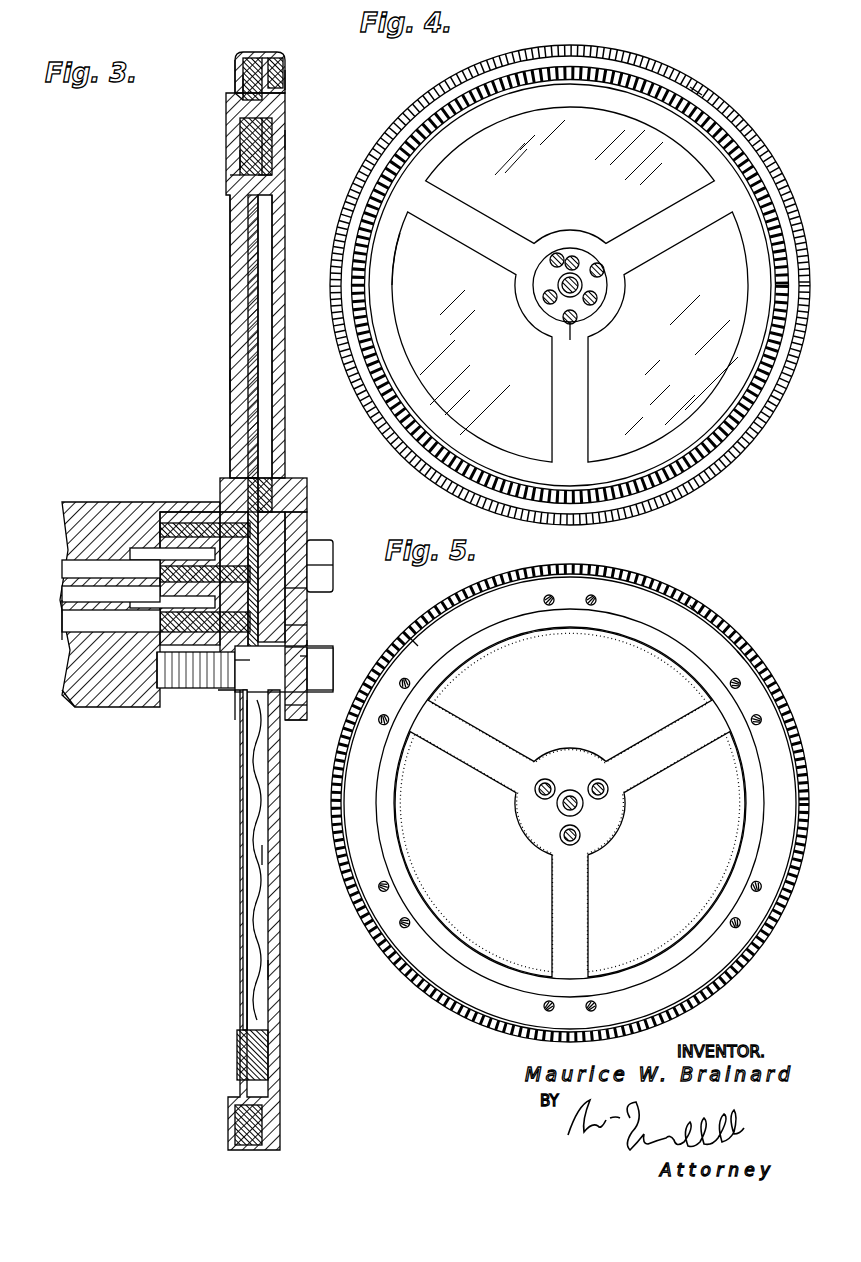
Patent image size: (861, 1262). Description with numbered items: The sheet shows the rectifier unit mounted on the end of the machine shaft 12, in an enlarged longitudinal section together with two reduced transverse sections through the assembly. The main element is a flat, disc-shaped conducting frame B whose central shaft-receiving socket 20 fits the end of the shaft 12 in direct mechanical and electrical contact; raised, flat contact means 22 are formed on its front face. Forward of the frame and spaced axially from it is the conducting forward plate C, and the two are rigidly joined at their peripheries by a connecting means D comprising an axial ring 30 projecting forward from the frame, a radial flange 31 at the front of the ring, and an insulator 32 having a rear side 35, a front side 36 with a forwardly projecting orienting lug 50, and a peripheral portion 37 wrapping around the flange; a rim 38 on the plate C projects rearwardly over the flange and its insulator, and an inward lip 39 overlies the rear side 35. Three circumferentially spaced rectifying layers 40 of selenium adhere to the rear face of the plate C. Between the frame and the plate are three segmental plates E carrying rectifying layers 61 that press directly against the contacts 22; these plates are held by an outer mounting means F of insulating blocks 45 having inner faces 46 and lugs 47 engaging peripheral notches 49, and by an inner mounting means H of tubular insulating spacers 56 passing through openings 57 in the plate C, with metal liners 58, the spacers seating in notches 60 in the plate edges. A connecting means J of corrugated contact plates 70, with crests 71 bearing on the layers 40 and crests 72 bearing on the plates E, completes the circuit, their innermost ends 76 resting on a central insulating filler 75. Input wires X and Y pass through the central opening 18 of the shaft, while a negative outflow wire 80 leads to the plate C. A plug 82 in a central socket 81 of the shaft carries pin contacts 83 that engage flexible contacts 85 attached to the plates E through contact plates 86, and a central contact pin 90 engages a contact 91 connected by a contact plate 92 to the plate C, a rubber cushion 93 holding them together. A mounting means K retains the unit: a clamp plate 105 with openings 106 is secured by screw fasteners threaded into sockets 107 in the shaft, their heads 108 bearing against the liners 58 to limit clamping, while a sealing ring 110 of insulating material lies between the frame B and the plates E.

In FIG. 3, the shaft 12 is at (90, 705).
In FIG. 3, the central opening 18 is at (62, 622).
In FIG. 3, the shaft-receiving socket 20 is at (226, 514).
In FIG. 3, the contact means 22 is at (240, 332).
In FIG. 4, the contact means 22 is at (570, 303).
In FIG. 3, the axial ring 30 is at (284, 112).
In FIG. 4, the axial ring 30 is at (409, 237).
In FIG. 3, the radially disposed flange 31 is at (284, 96).
In FIG. 3, the insulator 32 is at (284, 140).
In FIG. 4, the insulator 32 is at (570, 285).
In FIG. 5, the insulator 32 is at (447, 626).
In FIG. 3, the insulator side 35 is at (242, 80).
In FIG. 3, the insulator side 36 is at (270, 64).
In FIG. 3, the peripheral portion 37 is at (258, 54).
In FIG. 5, the peripheral portion 37 is at (570, 803).
In FIG. 3, the rim 38 is at (268, 62).
In FIG. 4, the rim 38 is at (570, 285).
In FIG. 5, the rim 38 is at (570, 790).
In FIG. 3, the lip 39 is at (240, 96).
In FIG. 3, the rectifying layers 40 is at (272, 305).
In FIG. 5, the rectifying layers 40 is at (570, 820).
In FIG. 3, the blocks 45 is at (242, 130).
In FIG. 3, the inner faces 46 is at (262, 180).
In FIG. 3, the lug 47 is at (266, 168).
In FIG. 3, the peripheral notches 49 is at (236, 165).
In FIG. 3, the forwardly projecting lug 50 is at (286, 80).
In FIG. 5, the forwardly projecting lug 50 is at (570, 803).
In FIG. 3, the spacers 56 is at (250, 656).
In FIG. 3, the openings 57 is at (306, 660).
In FIG. 3, the metal liners 58 is at (240, 718).
In FIG. 3, the notches 60 is at (200, 688).
In FIG. 3, the rectifying layers 61 is at (246, 272).
In FIG. 3, the contact 70 is at (255, 850).
In FIG. 3, the crests 71 is at (268, 900).
In FIG. 3, the crests 72 is at (246, 935).
In FIG. 3, the central filler 75 is at (270, 480).
In FIG. 3, the innermost ends 76 is at (300, 692).
In FIG. 3, the outflow wire 80 is at (111, 621).
In FIG. 3, the central socket 81 is at (162, 524).
In FIG. 3, the plug 82 is at (98, 700).
In FIG. 3, the pin contacts 83 is at (205, 522).
In FIG. 4, the pin contacts 83 is at (568, 286).
In FIG. 3, the flexible contact 85 is at (286, 522).
In FIG. 3, the contact plate 86 is at (308, 500).
In FIG. 3, the central contact pin 90 is at (320, 590).
In FIG. 4, the central contact pin 90 is at (608, 287).
In FIG. 5, the central contact pin 90 is at (611, 805).
In FIG. 3, the contact 91 is at (333, 565).
In FIG. 3, the contact plate 92 is at (333, 548).
In FIG. 3, the cushion 93 is at (300, 480).
In FIG. 3, the clamp plate 105 is at (290, 724).
In FIG. 3, the openings 106 is at (333, 670).
In FIG. 3, the threaded sockets 107 is at (162, 680).
In FIG. 3, the heads 108 is at (307, 710).
In FIG. 3, the sealing ring 110 is at (250, 486).
In FIG. 3, the frame B is at (218, 830).
In FIG. 3, the forward plate C is at (276, 970).
In FIG. 5, the forward plate C is at (753, 637).
In FIG. 3, the connecting means D is at (234, 72).
In FIG. 4, the connecting means D is at (701, 75).
In FIG. 5, the connecting means D is at (699, 591).
In FIG. 3, the segmental plates E is at (230, 382).
In FIG. 3, the outer mounting means F is at (240, 160).
In FIG. 3, the inner mounting means H is at (300, 630).
In FIG. 5, the inner mounting means H is at (570, 864).
In FIG. 3, the connecting means J is at (264, 856).
In FIG. 3, the mounting means K is at (322, 650).
In FIG. 4, the mounting means K is at (568, 349).
In FIG. 5, the mounting means K is at (586, 777).
In FIG. 3, the input wire X is at (111, 569).
In FIG. 3, the input wire Y is at (111, 594).